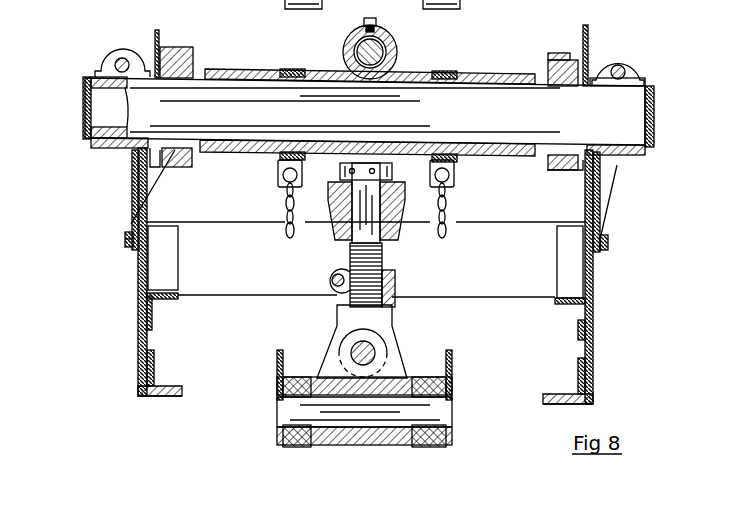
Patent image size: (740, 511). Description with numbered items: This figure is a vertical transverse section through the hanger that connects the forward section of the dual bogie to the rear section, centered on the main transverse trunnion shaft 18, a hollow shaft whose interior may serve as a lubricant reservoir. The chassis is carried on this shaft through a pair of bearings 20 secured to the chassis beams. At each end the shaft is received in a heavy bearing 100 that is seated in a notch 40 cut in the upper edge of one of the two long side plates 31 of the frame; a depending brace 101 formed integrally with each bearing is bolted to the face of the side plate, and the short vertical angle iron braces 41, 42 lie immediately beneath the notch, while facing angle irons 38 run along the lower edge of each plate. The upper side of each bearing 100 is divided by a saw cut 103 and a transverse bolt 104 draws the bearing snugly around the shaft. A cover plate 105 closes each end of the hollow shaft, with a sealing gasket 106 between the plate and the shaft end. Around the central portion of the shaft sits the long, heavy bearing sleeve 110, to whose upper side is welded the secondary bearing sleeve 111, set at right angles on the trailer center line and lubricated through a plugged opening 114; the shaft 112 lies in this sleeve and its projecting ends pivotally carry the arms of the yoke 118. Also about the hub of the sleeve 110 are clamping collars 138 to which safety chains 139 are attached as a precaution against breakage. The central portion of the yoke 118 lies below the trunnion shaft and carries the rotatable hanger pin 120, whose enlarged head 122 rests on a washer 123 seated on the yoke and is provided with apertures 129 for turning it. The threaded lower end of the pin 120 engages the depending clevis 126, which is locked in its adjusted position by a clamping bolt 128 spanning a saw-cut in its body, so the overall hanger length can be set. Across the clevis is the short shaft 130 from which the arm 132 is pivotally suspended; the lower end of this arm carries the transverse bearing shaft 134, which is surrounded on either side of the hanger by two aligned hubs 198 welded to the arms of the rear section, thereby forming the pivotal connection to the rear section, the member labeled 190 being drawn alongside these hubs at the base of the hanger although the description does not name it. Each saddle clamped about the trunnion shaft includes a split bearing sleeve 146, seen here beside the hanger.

The main transverse trunnion shaft 18 is at (655, 98).
The bearings 20 is at (180, 47).
The plates 31 is at (138, 345).
The angle irons 38 is at (150, 370).
The notches 40 is at (130, 166).
The vertical angle iron brace 41 is at (138, 390).
The vertical angle iron brace 42 is at (160, 265).
The heavy bearings 100 is at (100, 70).
The depending brace 101 is at (125, 200).
The saw cut 103 is at (95, 76).
The transverse bolt 104 is at (125, 60).
The cover plate 105 is at (84, 120).
The sealing gasket 106 is at (95, 148).
The bearing sleeve 110 is at (400, 50).
The secondary bearing sleeve 111 is at (400, 66).
The shaft 112 is at (356, 50).
The plugged opening 114 is at (380, 24).
The yoke 118 is at (405, 212).
The hanger pin 120 is at (362, 240).
The enlarged head 122 is at (286, 198).
The washer 123 is at (340, 176).
The depending clevis 126 is at (392, 316).
The clamping bolt 128 is at (330, 280).
The apertures 129 is at (390, 170).
The short shaft 130 is at (376, 352).
The arm 132 is at (395, 447).
The transverse bearing shaft 134 is at (277, 420).
The clamping collars 138 is at (282, 68).
The safety chains 139 is at (284, 236).
The split bearing sleeve 146 is at (177, 198).
The base plate 190 is at (277, 380).
The aligned hubs 198 is at (300, 448).